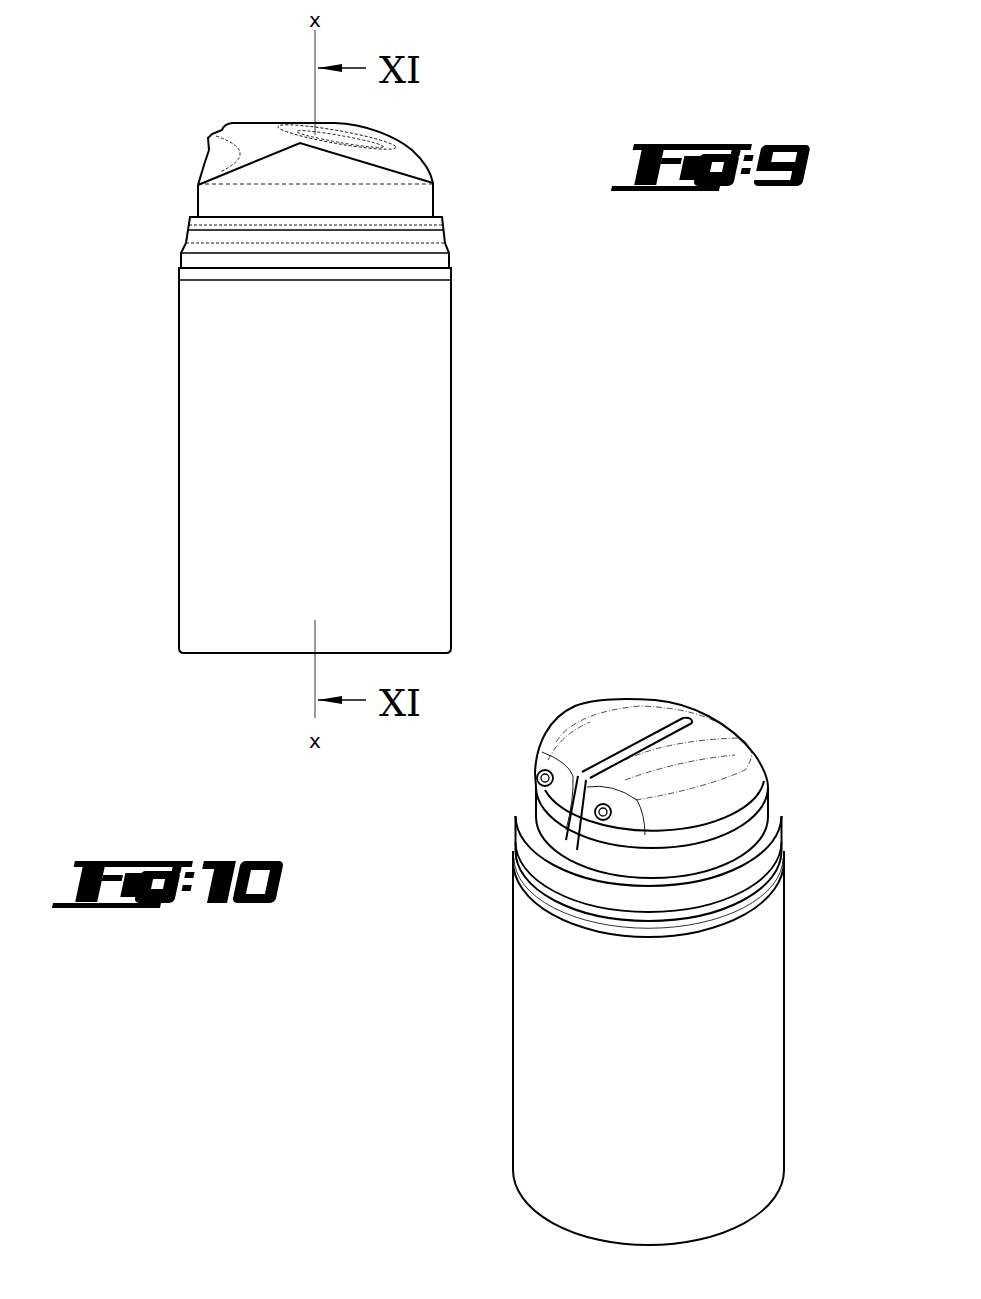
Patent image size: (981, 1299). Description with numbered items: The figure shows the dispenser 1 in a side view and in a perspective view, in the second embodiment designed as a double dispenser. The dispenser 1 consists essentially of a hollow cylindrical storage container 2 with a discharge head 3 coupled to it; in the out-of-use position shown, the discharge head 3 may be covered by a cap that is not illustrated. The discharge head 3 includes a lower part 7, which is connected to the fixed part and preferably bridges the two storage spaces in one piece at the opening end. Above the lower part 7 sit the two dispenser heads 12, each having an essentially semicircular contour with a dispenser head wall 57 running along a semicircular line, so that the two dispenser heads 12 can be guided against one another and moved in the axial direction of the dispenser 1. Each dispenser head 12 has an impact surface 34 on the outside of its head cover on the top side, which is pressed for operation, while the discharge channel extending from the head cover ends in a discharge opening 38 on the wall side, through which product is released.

In FIG. 9, the dispenser 1 is at (306, 350).
In FIG. 10, the dispenser 1 is at (650, 925).
In FIG. 9, the storage container 2 is at (403, 537).
In FIG. 10, the storage container 2 is at (727, 1048).
In FIG. 9, the discharge head 3 is at (302, 158).
In FIG. 10, the discharge head 3 is at (650, 815).
In FIG. 9, the lower part 7 is at (419, 241).
In FIG. 9, the dispenser head 12 is at (258, 113).
In FIG. 10, the dispenser head 12 is at (565, 717).
In FIG. 9, the impact surface 34 is at (367, 140).
In FIG. 10, the impact surface 34 is at (608, 723).
In FIG. 9, the discharge opening 38 is at (208, 141).
In FIG. 10, the discharge opening 38 is at (537, 786).
In FIG. 9, the dispenser head wall 57 is at (237, 189).
In FIG. 10, the dispenser head wall 57 is at (547, 828).